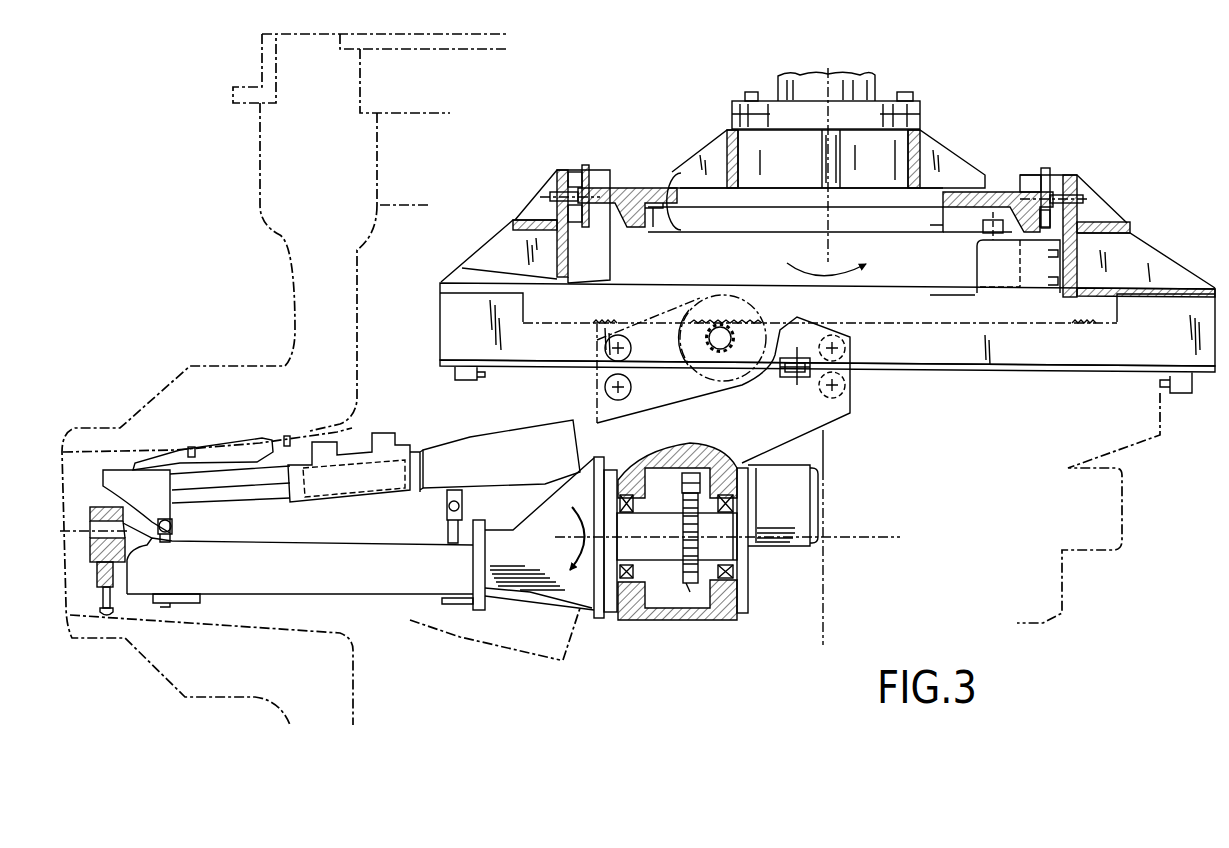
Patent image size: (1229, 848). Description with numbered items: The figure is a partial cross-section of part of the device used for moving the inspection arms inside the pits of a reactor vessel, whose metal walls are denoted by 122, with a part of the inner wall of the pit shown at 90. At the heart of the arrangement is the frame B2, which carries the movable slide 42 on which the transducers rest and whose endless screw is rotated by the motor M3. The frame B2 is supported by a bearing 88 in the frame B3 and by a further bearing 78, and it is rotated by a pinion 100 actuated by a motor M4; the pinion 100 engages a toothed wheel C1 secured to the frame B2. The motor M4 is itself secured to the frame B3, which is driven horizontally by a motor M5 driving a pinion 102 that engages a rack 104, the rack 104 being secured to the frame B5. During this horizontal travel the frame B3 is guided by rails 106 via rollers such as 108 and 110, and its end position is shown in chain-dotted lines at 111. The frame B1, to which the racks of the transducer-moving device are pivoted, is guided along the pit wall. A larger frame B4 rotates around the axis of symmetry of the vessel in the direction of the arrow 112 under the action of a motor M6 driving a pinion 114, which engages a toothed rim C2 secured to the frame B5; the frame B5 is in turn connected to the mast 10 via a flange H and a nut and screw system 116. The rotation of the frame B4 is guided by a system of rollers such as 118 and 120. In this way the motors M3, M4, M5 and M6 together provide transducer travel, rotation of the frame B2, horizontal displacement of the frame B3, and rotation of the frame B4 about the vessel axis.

The mast 10 is at (770, 79).
The nut and screw system 116 is at (745, 95).
The roller 118 is at (580, 167).
The roller 120 is at (542, 197).
The metal walls of the reactor vessel 122 is at (322, 289).
The pinion 102 is at (703, 340).
The arrow 112 is at (797, 272).
The pinion 114 is at (983, 227).
The rack 104 is at (592, 322).
The pinion 100 is at (691, 470).
The roller 110 is at (850, 368).
The roller 108 is at (850, 415).
The rails 106 is at (947, 370).
The end position of frame B3 111 is at (1122, 473).
The inner wall of the pit 90 is at (310, 431).
The bearing 78 is at (84, 517).
The movable slide 42 is at (303, 500).
The bearing 88 is at (642, 597).
The frame B1 is at (133, 465).
The frame B2 is at (300, 582).
The frame B3 is at (822, 435).
The frame B4 is at (1047, 355).
The frame B5 is at (925, 153).
The toothed wheel C1 is at (688, 588).
The toothed rim C2 is at (1010, 214).
The flange H is at (890, 97).
The motor M3 is at (524, 469).
The motor M4 is at (784, 504).
The motor M5 is at (754, 422).
The motor M6 is at (1000, 284).